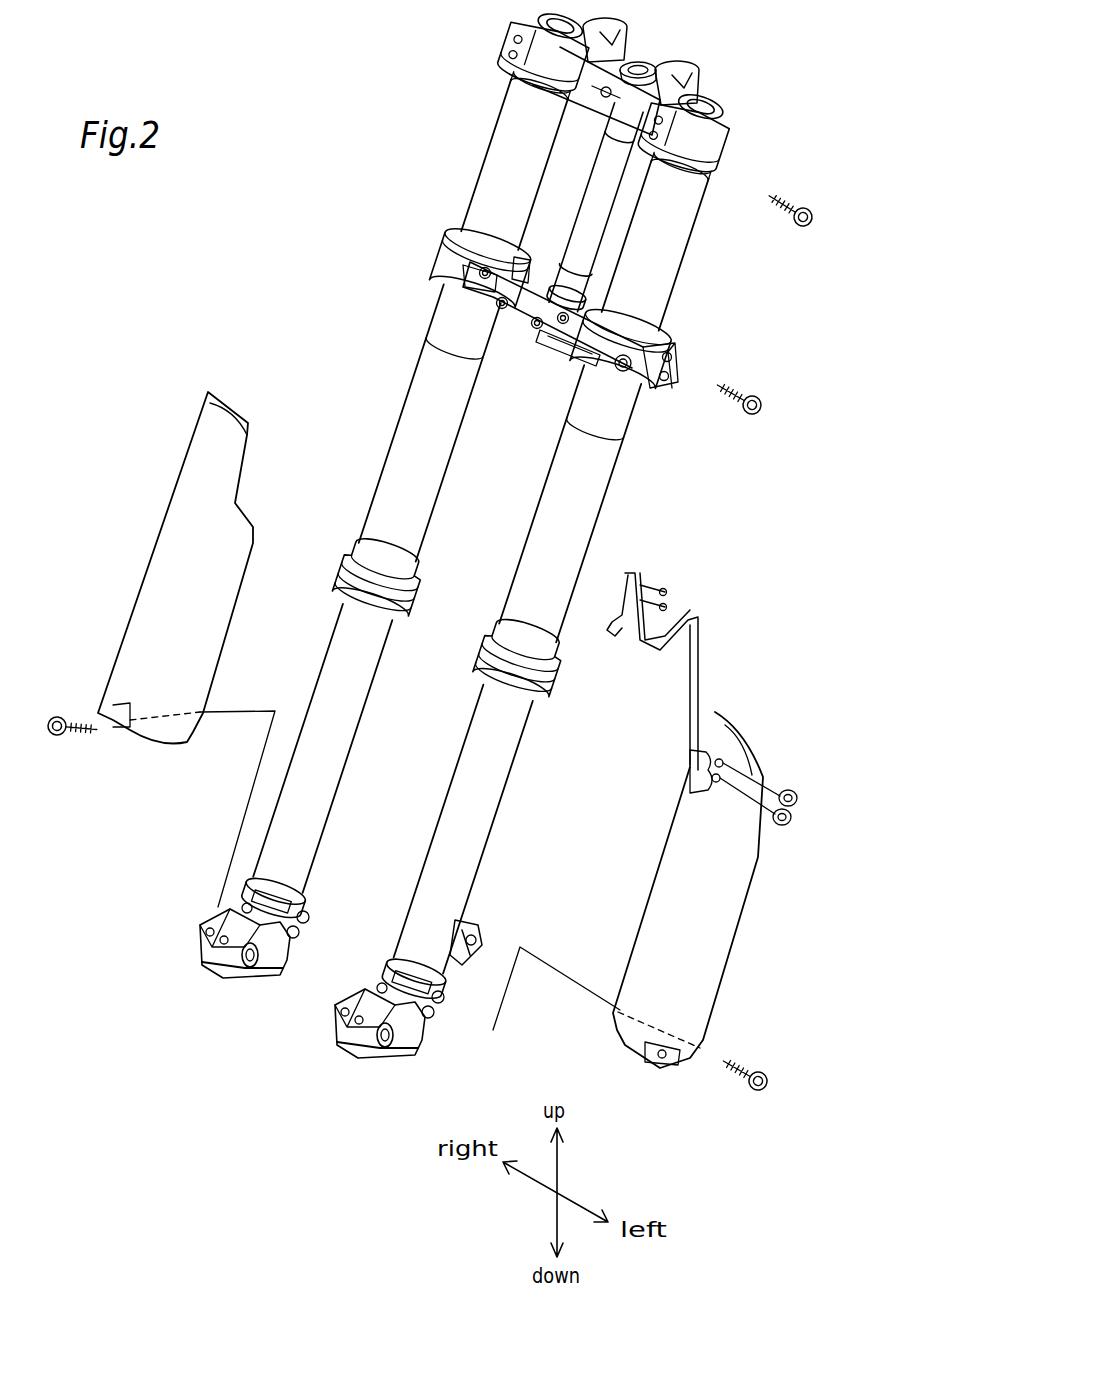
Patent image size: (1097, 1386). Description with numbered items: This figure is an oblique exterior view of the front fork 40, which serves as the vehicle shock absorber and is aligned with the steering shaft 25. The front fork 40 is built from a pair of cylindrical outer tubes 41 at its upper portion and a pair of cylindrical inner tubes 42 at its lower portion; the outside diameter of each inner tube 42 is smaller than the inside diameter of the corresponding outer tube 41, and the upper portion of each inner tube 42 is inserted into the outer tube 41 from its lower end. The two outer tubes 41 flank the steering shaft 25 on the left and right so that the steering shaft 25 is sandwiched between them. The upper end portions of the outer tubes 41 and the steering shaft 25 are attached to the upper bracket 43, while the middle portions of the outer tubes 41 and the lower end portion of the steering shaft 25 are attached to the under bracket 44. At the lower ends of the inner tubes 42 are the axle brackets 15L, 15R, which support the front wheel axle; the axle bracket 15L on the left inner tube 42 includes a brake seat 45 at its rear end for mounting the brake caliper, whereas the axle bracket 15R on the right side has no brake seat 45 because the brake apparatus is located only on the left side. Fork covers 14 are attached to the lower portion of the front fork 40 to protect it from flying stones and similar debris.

The fork cover 14 is at (205, 612).
The axle bracket 15L is at (382, 1082).
The axle bracket 15R is at (225, 1000).
The steering shaft 25 is at (598, 212).
The front fork 40 is at (480, 80).
The outer tube 41 is at (505, 150).
The inner tube 42 is at (320, 751).
The upper bracket 43 is at (715, 147).
The under bracket 44 is at (660, 390).
The brake seat 45 is at (494, 920).